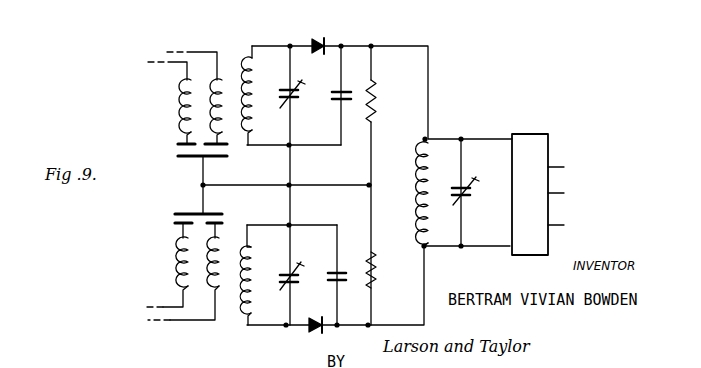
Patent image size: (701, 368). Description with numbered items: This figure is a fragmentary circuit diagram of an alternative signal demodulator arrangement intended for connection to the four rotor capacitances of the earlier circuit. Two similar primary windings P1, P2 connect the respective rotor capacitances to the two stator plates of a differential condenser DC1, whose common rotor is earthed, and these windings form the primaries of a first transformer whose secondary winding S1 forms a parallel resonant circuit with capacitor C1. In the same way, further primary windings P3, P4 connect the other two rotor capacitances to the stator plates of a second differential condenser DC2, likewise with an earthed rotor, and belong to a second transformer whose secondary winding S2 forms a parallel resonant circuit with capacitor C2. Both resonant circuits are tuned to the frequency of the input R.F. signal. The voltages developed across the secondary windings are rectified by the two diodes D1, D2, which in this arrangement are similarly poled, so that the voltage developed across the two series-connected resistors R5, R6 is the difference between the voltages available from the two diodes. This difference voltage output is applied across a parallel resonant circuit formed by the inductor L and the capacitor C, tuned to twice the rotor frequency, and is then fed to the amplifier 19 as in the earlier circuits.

The primary winding P1 is at (183, 101).
The primary winding P2 is at (221, 78).
The primary winding P3 is at (219, 290).
The primary winding P4 is at (165, 265).
The secondary winding S1 is at (260, 95).
The secondary winding S2 is at (258, 275).
The capacitor C1 is at (300, 100).
The capacitor C2 is at (298, 283).
The diode D1 is at (319, 35).
The diode D2 is at (319, 337).
The resistor R5 is at (385, 101).
The resistor R6 is at (382, 270).
The differential condenser DC1 is at (221, 164).
The differential condenser DC2 is at (216, 207).
The inductor L is at (429, 194).
The capacitor C is at (466, 196).
The amplifier 19 is at (527, 147).